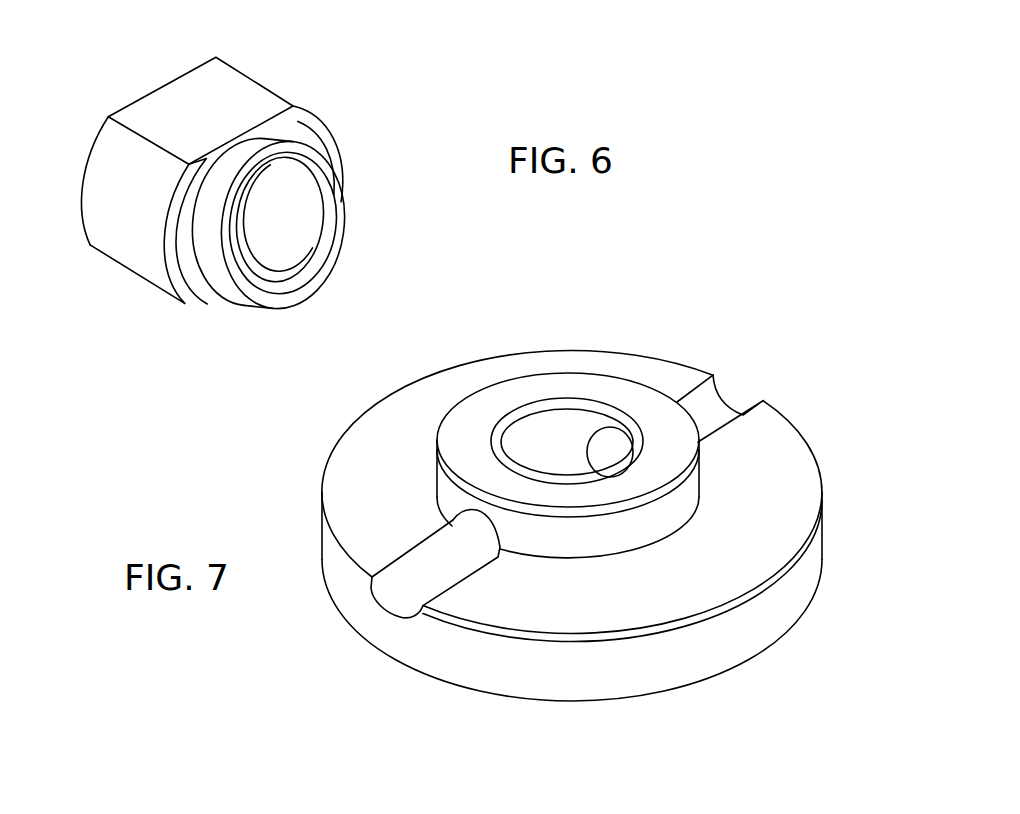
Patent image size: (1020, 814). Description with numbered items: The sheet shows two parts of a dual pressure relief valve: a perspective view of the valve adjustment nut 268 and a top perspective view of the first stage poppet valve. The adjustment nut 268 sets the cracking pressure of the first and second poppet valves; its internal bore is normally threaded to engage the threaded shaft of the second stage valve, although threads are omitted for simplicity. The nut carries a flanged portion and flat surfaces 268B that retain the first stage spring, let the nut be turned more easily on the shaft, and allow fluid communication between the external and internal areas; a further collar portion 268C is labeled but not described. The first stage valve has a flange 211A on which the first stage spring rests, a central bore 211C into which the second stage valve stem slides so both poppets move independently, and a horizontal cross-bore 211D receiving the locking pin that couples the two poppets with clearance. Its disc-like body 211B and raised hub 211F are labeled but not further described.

In FIG. 6, the adjustment nut 268 is at (288, 108).
In FIG. 6, the flat surfaces 268B is at (171, 108).
In FIG. 6, the threaded collar 268C is at (342, 206).
In FIG. 7, the flange 211A is at (767, 494).
In FIG. 7, the base disc 211B is at (749, 681).
In FIG. 7, the bore 211C is at (568, 447).
In FIG. 7, the horizontal bore 211D is at (485, 543).
In FIG. 7, the hub 211F is at (465, 452).